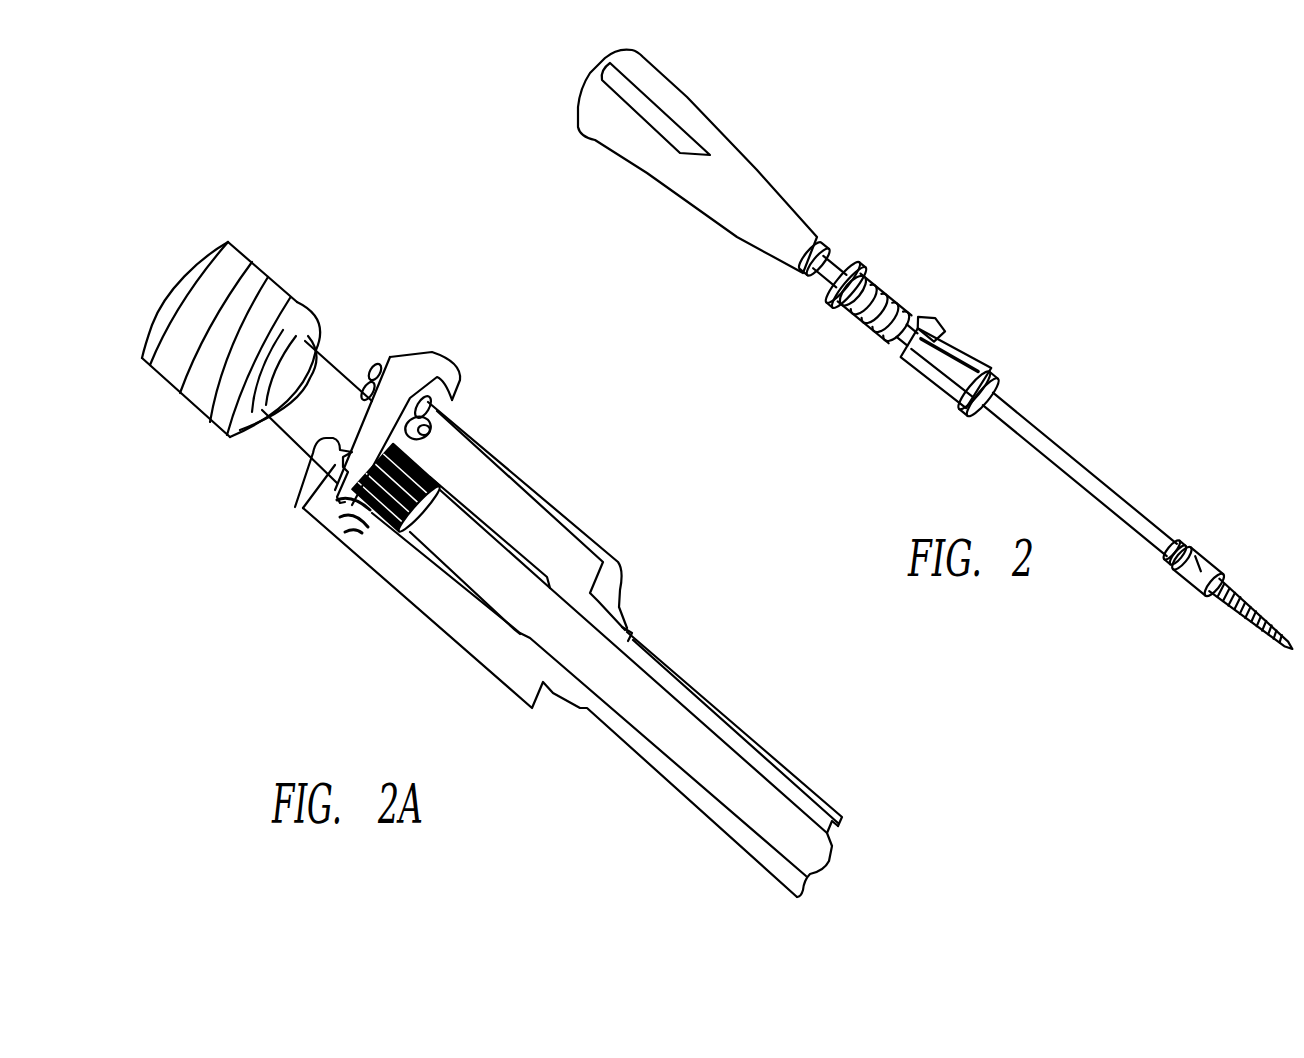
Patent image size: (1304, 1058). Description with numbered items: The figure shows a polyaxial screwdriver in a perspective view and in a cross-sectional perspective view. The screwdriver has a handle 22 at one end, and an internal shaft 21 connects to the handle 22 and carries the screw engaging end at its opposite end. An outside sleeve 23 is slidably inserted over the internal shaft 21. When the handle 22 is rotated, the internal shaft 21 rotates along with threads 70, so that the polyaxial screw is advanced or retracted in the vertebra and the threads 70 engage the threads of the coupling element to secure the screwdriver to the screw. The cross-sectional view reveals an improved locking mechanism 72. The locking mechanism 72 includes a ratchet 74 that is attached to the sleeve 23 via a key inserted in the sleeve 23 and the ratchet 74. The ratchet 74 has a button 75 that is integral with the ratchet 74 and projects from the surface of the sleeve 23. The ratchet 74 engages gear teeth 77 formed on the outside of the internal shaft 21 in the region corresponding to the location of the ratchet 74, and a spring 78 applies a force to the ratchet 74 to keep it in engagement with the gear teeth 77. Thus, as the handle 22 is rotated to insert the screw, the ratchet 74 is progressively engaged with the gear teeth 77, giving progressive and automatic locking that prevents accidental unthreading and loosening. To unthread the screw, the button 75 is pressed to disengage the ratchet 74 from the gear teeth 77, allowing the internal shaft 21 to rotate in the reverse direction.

In FIG. 2, the handle 22 is at (692, 145).
In FIG. 2, the outside sleeve 23 is at (1083, 475).
In FIG. 2A, the outside sleeve 23 is at (707, 717).
In FIG. 2A, the threads 70 is at (608, 480).
In FIG. 2A, the internal shaft 21 is at (567, 628).
In FIG. 2A, the locking mechanism 72 is at (478, 378).
In FIG. 2A, the button 75 is at (412, 352).
In FIG. 2A, the ratchet 74 is at (350, 455).
In FIG. 2A, the spring 78 is at (342, 535).
In FIG. 2A, the gear teeth 77 is at (382, 535).